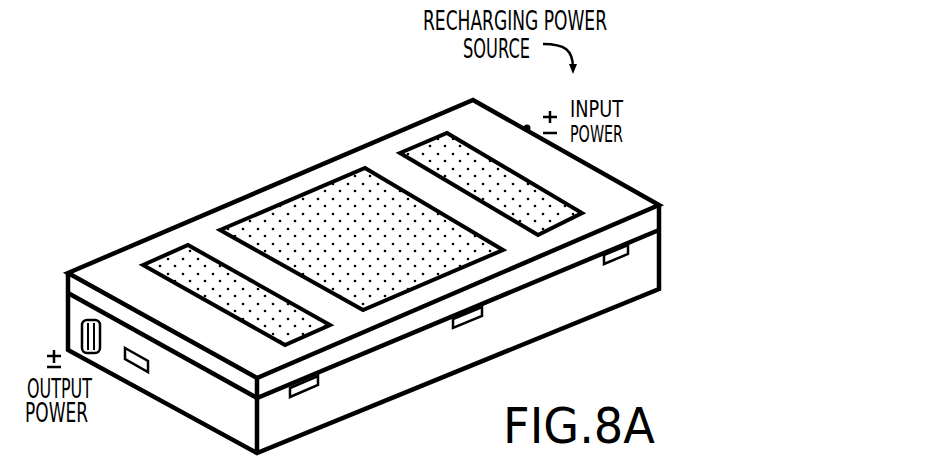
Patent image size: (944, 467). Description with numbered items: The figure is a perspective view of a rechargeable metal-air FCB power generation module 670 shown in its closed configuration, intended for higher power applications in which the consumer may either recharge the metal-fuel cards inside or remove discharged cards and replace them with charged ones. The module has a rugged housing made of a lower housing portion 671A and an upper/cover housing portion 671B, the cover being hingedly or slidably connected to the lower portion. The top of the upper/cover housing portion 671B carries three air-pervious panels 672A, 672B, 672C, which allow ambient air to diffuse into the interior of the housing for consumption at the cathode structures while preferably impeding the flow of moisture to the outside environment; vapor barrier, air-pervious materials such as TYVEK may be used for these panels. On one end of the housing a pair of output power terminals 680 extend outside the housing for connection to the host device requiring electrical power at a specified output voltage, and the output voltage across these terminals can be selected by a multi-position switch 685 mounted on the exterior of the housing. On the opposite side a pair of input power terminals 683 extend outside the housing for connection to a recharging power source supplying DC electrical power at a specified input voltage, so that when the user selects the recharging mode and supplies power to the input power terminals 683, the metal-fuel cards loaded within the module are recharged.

The rechargeable metal-air FCB power generation module 670 is at (354, 264).
The lower housing portion 671A is at (641, 300).
The upper/cover housing portion 671B is at (208, 220).
The air-pervious panel 672A is at (173, 250).
The air-pervious panel 672B is at (315, 195).
The air-pervious panel 672C is at (427, 143).
The output power terminals 680 is at (80, 322).
The input power terminals 683 is at (527, 125).
The multi-position switch 685 is at (138, 370).